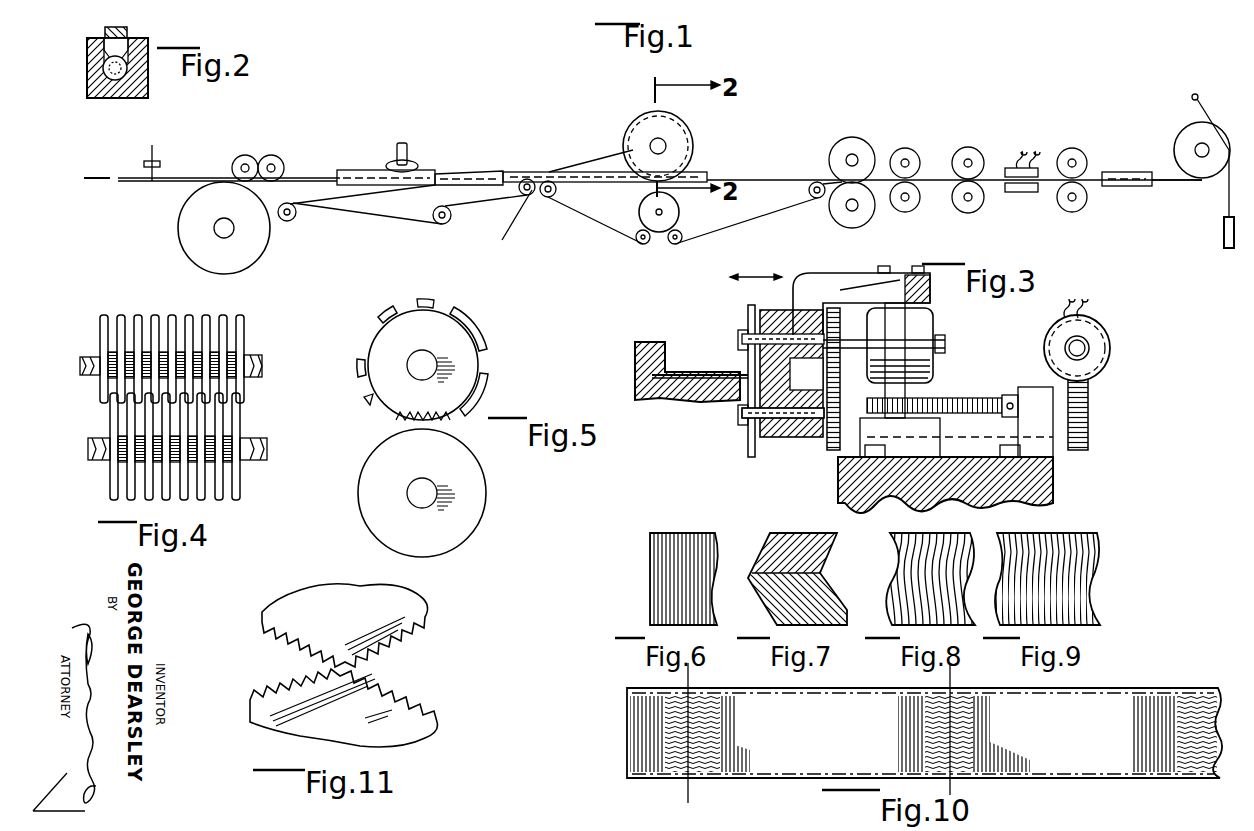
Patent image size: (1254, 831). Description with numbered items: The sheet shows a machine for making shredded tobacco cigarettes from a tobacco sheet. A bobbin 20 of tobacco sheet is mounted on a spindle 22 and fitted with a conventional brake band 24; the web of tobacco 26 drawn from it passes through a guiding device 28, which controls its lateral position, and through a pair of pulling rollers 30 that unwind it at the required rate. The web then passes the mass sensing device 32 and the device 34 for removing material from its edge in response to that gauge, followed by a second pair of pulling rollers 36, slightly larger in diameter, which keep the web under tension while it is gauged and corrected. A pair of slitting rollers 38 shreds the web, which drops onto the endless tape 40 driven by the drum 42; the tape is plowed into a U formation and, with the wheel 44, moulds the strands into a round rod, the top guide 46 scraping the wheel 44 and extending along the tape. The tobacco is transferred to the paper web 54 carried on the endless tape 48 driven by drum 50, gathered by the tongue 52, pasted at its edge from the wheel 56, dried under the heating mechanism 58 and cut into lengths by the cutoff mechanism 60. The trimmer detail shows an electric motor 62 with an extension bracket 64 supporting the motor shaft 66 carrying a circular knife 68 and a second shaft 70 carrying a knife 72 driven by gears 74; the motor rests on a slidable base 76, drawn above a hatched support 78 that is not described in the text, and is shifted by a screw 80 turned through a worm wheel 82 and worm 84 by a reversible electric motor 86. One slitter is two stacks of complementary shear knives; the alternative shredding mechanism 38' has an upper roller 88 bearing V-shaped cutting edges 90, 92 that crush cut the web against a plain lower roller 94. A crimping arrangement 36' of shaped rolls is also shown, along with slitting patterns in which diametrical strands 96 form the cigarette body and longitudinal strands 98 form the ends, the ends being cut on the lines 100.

In FIG. 1, the bobbin of tobacco sheet 20 is at (1186, 128).
In FIG. 1, the spindle 22 is at (1195, 148).
In FIG. 1, the brake band 24 is at (1229, 199).
In FIG. 1, the web of tobacco 26 is at (1168, 182).
In FIG. 3, the web of tobacco 26 is at (735, 372).
In FIG. 1, the guiding device 28 is at (1122, 187).
In FIG. 1, the pulling rollers 30 is at (1078, 143).
In FIG. 1, the mass sensing device 32 is at (1027, 192).
In FIG. 1, the device for removing material from the web 34 is at (969, 143).
In FIG. 3, the device for removing material from the web 34 is at (726, 342).
In FIG. 1, the pulling rollers 36 is at (911, 156).
In FIG. 1, the slitting rollers 38 is at (852, 164).
In FIG. 4, the slitting rollers 38 is at (183, 407).
In FIG. 1, the endless tape 40 is at (742, 224).
In FIG. 1, the drum 42 is at (680, 208).
In FIG. 1, the wheel 44 is at (675, 127).
In FIG. 2, the wheel 44 is at (127, 33).
In FIG. 1, the top guide 46 is at (582, 165).
In FIG. 1, the endless tape 48 is at (396, 220).
In FIG. 1, the drum 50 is at (243, 258).
In FIG. 1, the tongue 52 is at (487, 171).
In FIG. 1, the web 54 is at (518, 222).
In FIG. 2, the web 54 is at (117, 96).
In FIG. 1, the wheel 56 is at (413, 144).
In FIG. 1, the heating mechanism 58 is at (280, 158).
In FIG. 1, the cutoff mechanism 60 is at (158, 150).
In FIG. 3, the electric motor 62 is at (933, 345).
In FIG. 3, the extension bracket 64 is at (860, 283).
In FIG. 3, the motor shaft 66 is at (778, 330).
In FIG. 3, the circular knife 68 is at (750, 312).
In FIG. 3, the second shaft 70 is at (800, 425).
In FIG. 3, the knife 72 is at (748, 440).
In FIG. 3, the gears 74 is at (835, 452).
In FIG. 3, the base 76 is at (890, 440).
In FIG. 3, the base 78 is at (960, 460).
In FIG. 3, the screw 80 is at (960, 406).
In FIG. 3, the worm wheel 82 is at (1090, 402).
In FIG. 3, the worm 84 is at (1080, 348).
In FIG. 3, the reversible electric motor 86 is at (1100, 325).
In FIG. 5, the upper roller 88 is at (458, 368).
In FIG. 5, the V-shaped cutting edge 90 is at (362, 383).
In FIG. 5, the V-shaped cutting edge 92 is at (385, 315).
In FIG. 5, the plain lower roller 94 is at (487, 500).
In FIG. 10, the diametrical strands 96 is at (775, 762).
In FIG. 10, the longitudinal strands 98 is at (705, 762).
In FIG. 10, the lines 100 is at (688, 790).
In FIG. 5, the web shredding mechanism 38' is at (440, 343).
In FIG. 11, the arrangement 36' is at (365, 665).